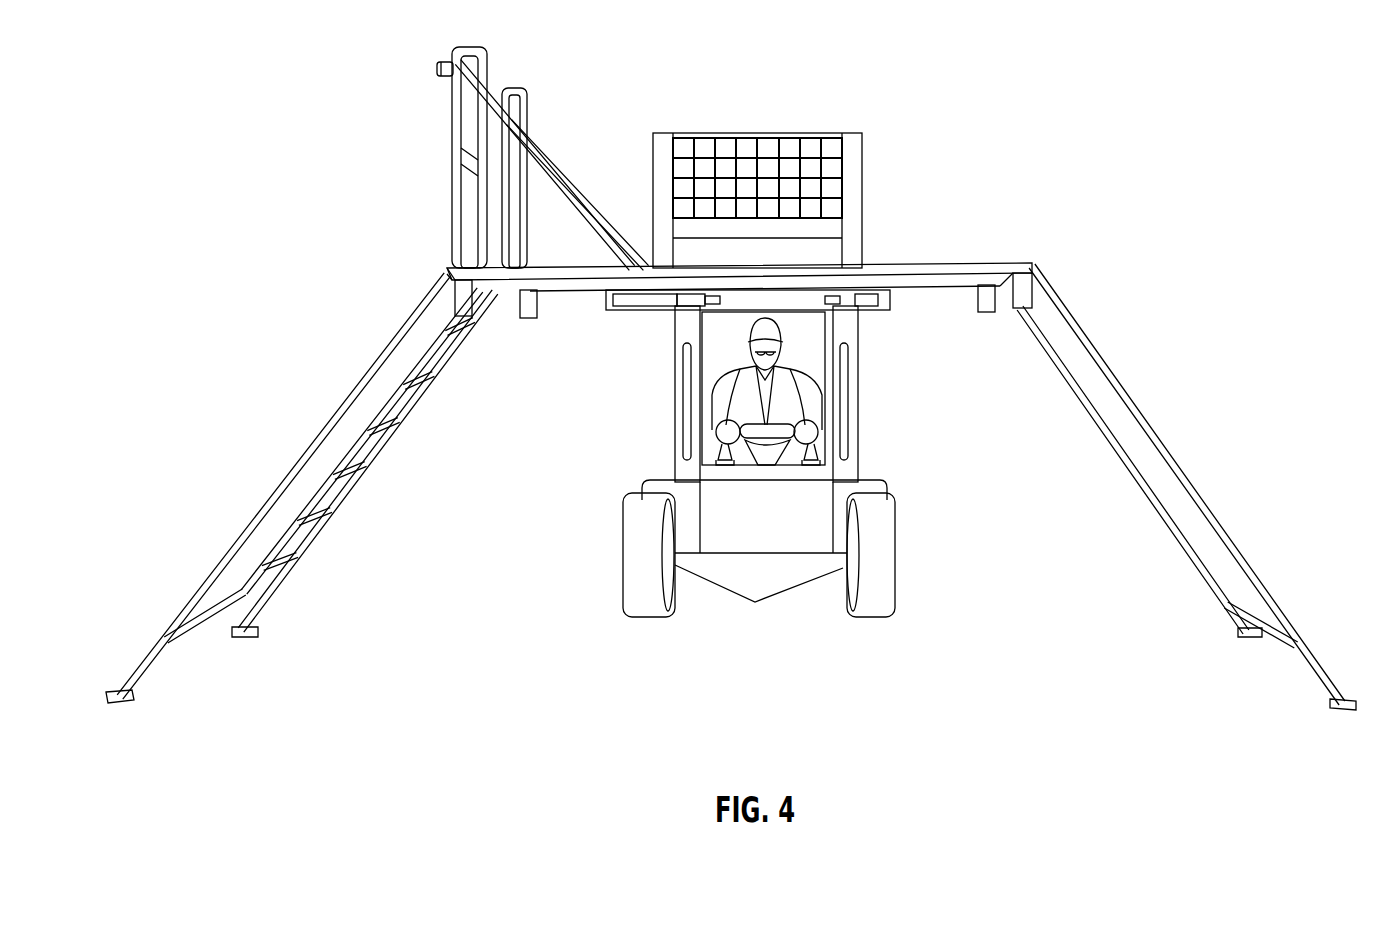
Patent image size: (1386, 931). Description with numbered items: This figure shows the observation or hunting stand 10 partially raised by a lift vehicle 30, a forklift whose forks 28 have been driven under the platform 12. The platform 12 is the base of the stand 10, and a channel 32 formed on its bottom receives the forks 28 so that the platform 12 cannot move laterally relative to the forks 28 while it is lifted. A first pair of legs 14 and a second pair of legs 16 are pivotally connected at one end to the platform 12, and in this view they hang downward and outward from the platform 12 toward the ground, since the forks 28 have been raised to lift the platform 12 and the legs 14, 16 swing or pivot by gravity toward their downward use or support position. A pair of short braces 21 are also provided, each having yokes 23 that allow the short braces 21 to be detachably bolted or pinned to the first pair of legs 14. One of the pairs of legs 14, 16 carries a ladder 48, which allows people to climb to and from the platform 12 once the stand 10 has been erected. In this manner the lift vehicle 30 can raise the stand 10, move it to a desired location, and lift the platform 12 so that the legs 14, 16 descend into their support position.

The observation or hunting stand 10 is at (912, 91).
The platform 12 is at (946, 263).
The first pair of legs 14 is at (290, 478).
The second pair of legs 16 is at (1163, 443).
The short braces 21 is at (568, 185).
The yokes 23 is at (437, 70).
The forks 28 is at (678, 318).
The lift vehicle 30 is at (860, 413).
The channel 32 is at (613, 312).
The ladder 48 is at (420, 403).